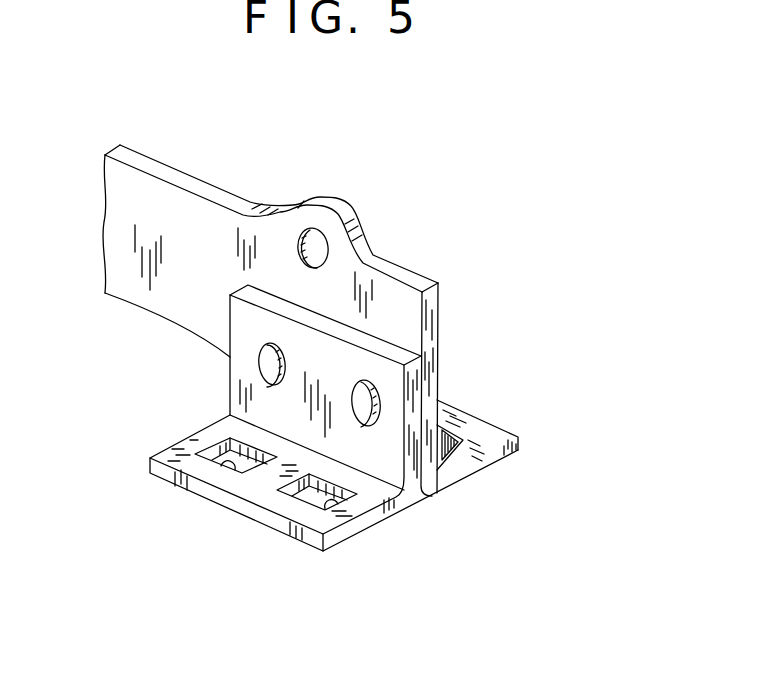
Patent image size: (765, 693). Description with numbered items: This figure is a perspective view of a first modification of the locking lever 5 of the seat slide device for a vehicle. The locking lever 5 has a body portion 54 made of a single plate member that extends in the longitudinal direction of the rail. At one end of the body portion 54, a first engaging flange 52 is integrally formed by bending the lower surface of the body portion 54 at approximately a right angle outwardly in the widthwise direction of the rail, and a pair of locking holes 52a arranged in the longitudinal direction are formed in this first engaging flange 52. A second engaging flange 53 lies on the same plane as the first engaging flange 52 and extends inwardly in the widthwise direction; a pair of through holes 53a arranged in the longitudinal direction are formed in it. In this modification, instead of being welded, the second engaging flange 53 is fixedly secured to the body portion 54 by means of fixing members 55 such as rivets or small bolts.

The locking lever 5 is at (406, 224).
The first engaging flange 52 is at (477, 427).
The locking holes 52a is at (452, 442).
The second engaging flange 53 is at (257, 493).
The through holes 53a is at (224, 468).
The body portion 54 is at (157, 296).
The fixing members 55 is at (273, 360).